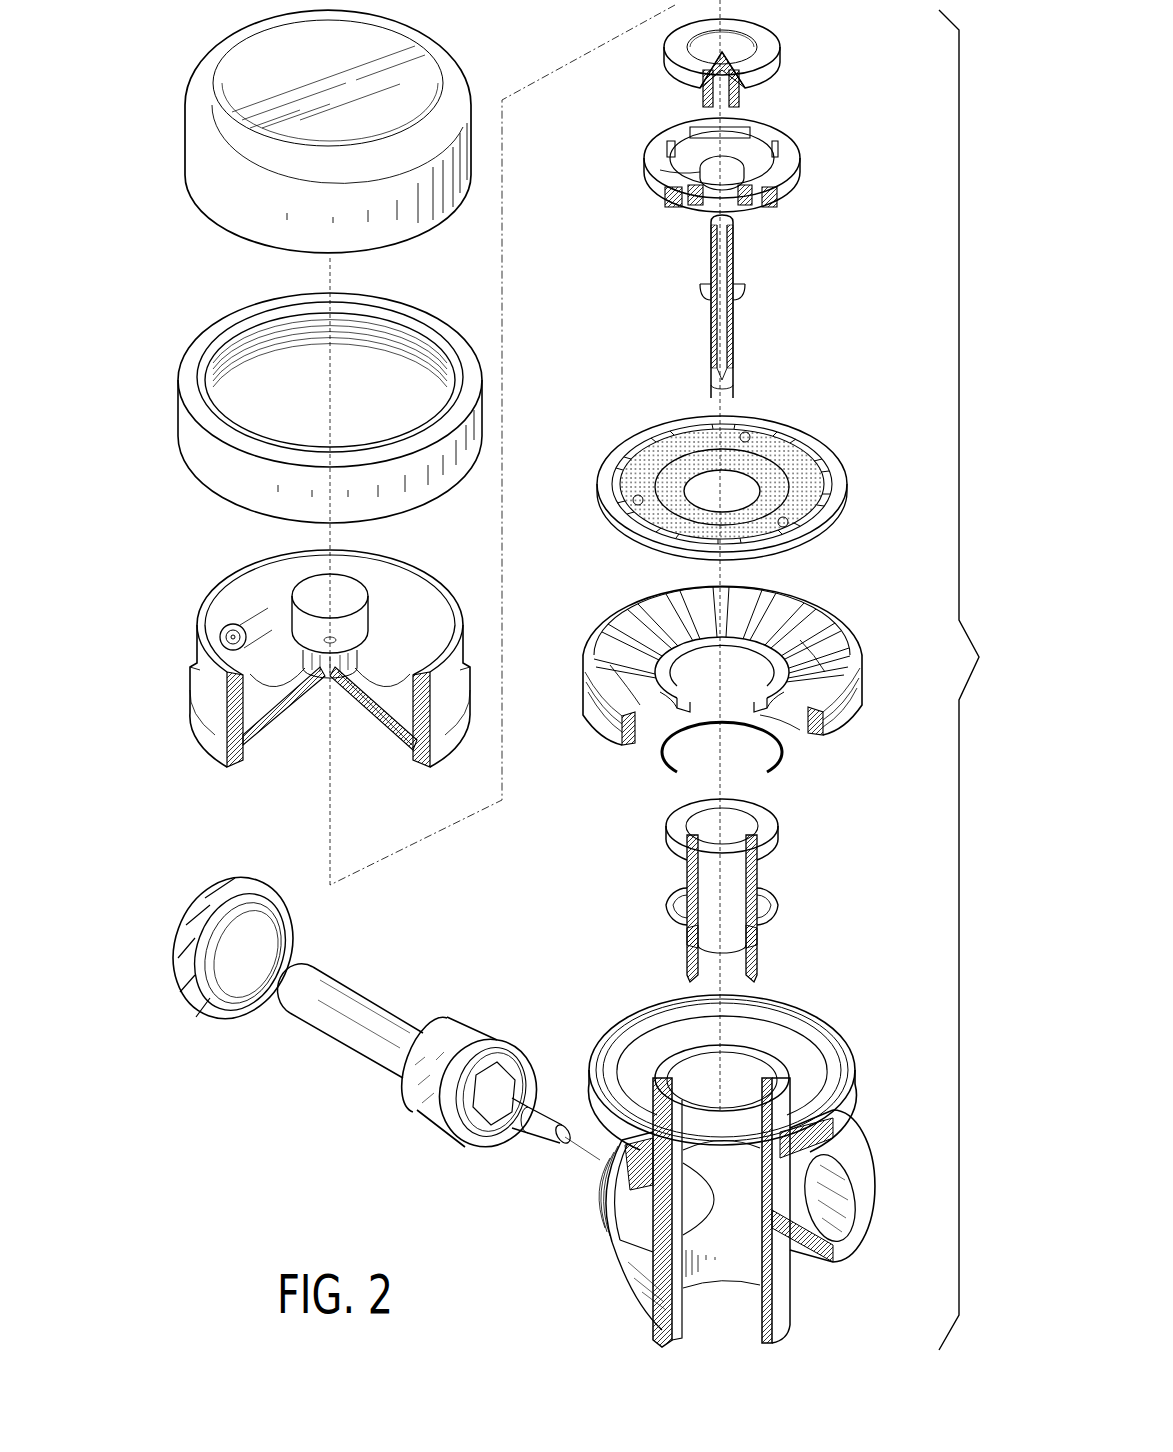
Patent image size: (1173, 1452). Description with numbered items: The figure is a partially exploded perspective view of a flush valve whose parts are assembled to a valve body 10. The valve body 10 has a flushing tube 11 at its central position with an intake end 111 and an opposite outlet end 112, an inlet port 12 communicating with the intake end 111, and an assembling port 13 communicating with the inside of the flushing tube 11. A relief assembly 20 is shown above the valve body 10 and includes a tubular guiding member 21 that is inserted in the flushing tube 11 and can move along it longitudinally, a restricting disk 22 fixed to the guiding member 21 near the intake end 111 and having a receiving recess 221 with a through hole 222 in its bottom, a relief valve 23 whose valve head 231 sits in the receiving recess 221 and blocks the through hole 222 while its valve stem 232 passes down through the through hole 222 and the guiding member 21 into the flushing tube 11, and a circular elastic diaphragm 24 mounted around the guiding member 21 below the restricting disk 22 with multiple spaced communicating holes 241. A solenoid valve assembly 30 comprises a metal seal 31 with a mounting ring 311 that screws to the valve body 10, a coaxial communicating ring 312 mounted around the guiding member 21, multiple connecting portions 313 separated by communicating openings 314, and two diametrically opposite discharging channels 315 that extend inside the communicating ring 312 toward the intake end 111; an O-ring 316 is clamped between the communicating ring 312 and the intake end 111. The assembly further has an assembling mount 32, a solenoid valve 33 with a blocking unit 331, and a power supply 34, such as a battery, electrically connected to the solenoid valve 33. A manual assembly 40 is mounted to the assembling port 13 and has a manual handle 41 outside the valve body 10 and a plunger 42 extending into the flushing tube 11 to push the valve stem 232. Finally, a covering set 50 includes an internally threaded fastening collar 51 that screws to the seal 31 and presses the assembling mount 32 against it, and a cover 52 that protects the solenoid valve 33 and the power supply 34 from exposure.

The valve body 10 is at (730, 1152).
The flushing tube 11 is at (736, 1197).
The inlet port 12 is at (867, 1215).
The assembling port 13 is at (605, 1208).
The intake end 111 is at (777, 1060).
The outlet end 112 is at (658, 1350).
The relief assembly 20 is at (727, 491).
The guiding member 21 is at (688, 867).
The restricting disk 22 is at (734, 151).
The receiving recess 221 is at (680, 170).
The through hole 222 is at (730, 157).
The relief valve 23 is at (771, 54).
The valve head 231 is at (743, 50).
The valve stem 232 is at (708, 334).
The diaphragm 24 is at (727, 473).
The communicating holes 241 is at (641, 495).
The solenoid valve assembly 30 is at (295, 652).
The seal 31 is at (711, 682).
The mounting ring 311 is at (610, 728).
The communicating ring 312 is at (688, 637).
The connecting portions 313 is at (632, 687).
The communicating openings 314 is at (817, 652).
The discharging channels 315 is at (785, 722).
The O-ring 316 is at (673, 772).
The assembling mount 32 is at (193, 750).
The solenoid valve 33 is at (368, 578).
The blocking unit 331 is at (336, 638).
The power supply 34 is at (253, 615).
The manual assembly 40 is at (377, 1028).
The manual handle 41 is at (363, 1032).
The plunger 42 is at (545, 1133).
The covering set 50 is at (287, 265).
The fastening collar 51 is at (208, 333).
The cover 52 is at (412, 68).